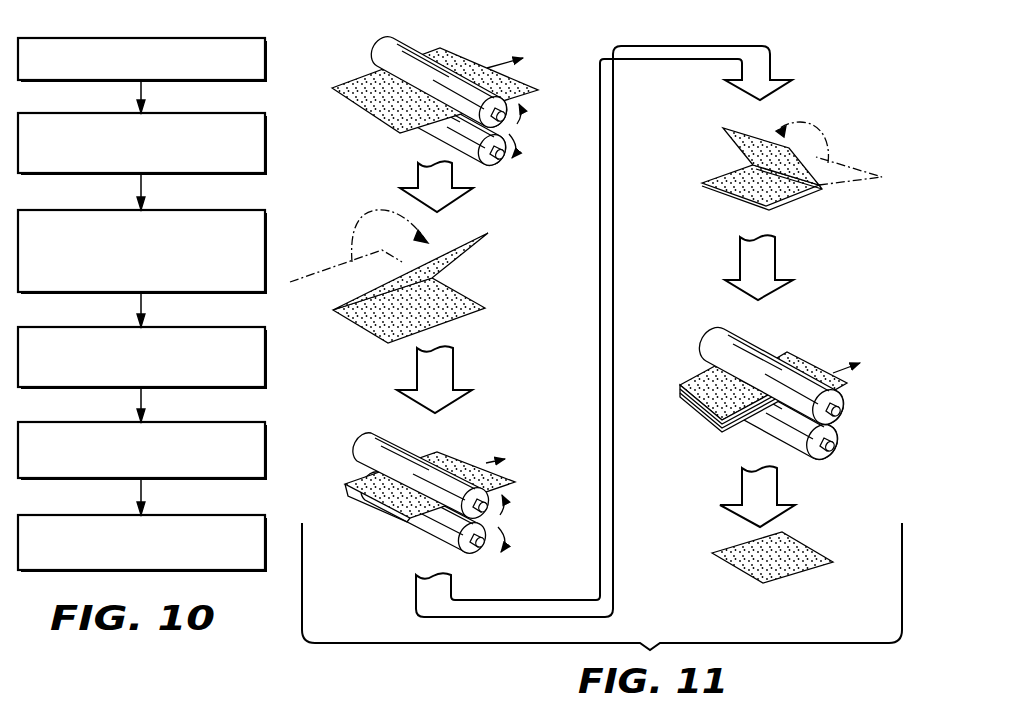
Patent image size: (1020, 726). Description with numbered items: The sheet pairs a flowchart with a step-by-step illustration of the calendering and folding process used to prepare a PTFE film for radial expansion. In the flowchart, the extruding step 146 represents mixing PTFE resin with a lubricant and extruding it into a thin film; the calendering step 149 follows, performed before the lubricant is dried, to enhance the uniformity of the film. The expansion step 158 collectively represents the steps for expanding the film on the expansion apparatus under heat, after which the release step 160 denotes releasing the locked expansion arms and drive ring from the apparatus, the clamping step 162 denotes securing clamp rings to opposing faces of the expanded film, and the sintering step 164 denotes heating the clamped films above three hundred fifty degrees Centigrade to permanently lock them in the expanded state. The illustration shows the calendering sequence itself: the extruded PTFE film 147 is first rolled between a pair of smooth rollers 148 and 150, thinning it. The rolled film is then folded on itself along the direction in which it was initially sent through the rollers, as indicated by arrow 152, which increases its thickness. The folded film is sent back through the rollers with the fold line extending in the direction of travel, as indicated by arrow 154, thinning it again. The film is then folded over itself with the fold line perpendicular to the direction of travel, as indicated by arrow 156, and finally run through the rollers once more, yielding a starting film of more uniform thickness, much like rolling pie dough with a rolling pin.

In FIG. 10, the extruding step 146 is at (242, 14).
In FIG. 10, the calendering step 149 is at (242, 96).
In FIG. 10, the expansion step 158 is at (241, 190).
In FIG. 10, the release step 160 is at (241, 305).
In FIG. 10, the clamping step 162 is at (242, 402).
In FIG. 10, the sintering step 164 is at (241, 497).
In FIG. 11, the PTFE film 147 is at (358, 78).
In FIG. 11, the smooth roller 148 is at (415, 42).
In FIG. 11, the smooth roller 150 is at (486, 168).
In FIG. 11, the arrow 152 is at (370, 187).
In FIG. 11, the arrow 154 is at (490, 460).
In FIG. 11, the arrow 156 is at (830, 140).